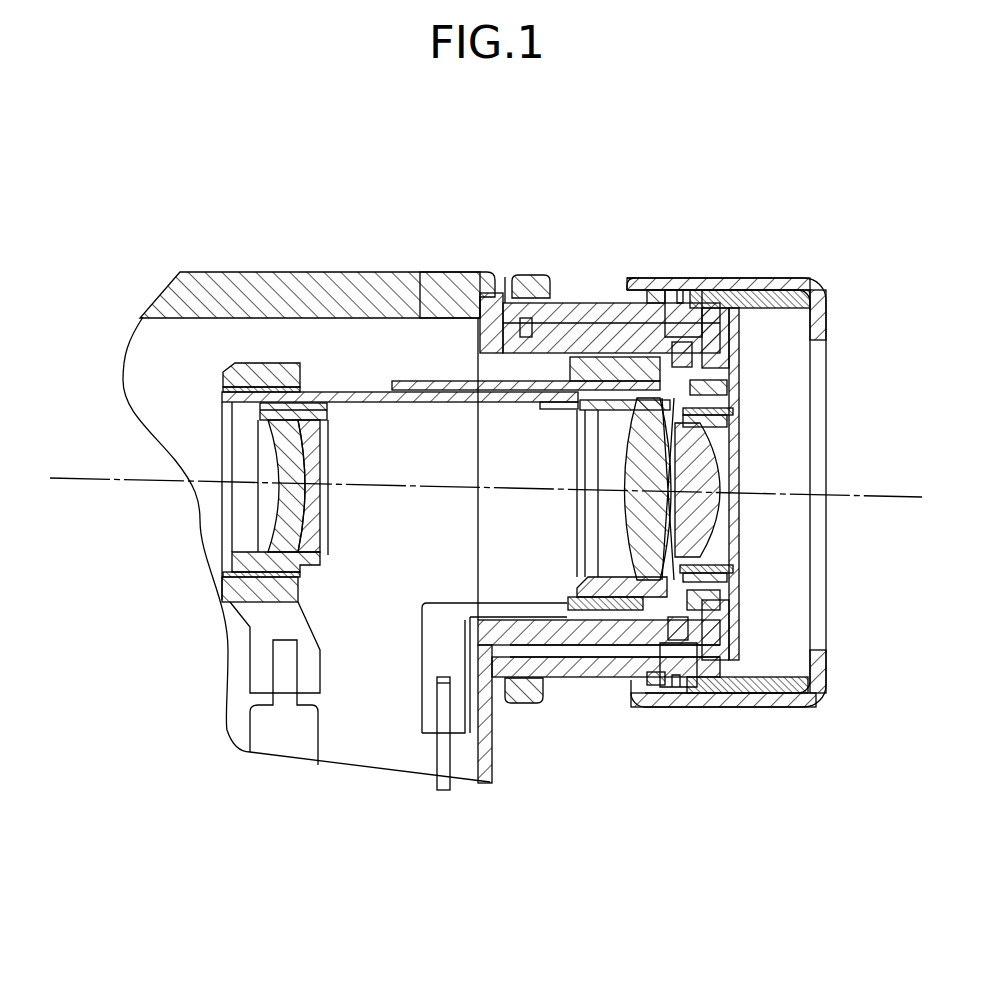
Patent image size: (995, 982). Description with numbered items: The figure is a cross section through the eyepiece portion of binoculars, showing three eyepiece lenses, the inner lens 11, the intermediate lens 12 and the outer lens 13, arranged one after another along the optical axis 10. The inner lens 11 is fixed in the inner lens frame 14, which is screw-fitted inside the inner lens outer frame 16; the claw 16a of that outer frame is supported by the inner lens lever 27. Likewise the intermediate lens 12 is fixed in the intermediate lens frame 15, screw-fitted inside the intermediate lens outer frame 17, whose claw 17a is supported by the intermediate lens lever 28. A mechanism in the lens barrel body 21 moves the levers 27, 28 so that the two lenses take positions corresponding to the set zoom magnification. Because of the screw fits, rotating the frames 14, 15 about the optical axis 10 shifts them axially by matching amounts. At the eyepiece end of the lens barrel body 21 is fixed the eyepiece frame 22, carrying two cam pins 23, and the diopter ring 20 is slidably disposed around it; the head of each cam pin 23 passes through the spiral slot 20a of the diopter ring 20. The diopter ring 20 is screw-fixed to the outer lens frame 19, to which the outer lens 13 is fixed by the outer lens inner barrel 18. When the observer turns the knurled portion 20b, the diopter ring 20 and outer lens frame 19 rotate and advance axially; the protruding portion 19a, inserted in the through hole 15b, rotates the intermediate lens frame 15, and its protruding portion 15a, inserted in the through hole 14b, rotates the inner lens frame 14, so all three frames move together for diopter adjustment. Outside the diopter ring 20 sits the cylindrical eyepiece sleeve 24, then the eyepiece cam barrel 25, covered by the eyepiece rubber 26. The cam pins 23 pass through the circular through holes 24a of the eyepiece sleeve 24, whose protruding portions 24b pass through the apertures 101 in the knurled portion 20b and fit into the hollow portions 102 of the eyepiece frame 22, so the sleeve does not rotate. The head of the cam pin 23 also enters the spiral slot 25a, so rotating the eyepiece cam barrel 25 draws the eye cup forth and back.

The optical axis 10 is at (135, 470).
The inner lens 11 is at (290, 505).
The intermediate lens 12 is at (645, 495).
The outer lens 13 is at (712, 513).
The inner lens frame 14 is at (300, 385).
The through hole 14b is at (330, 395).
The intermediate lens frame 15 is at (580, 580).
The protruding portion 15a is at (348, 392).
The through hole 15b is at (555, 402).
The inner lens outer frame 16 is at (262, 598).
The claw 16a is at (255, 670).
The intermediate lens outer frame 17 is at (570, 680).
The claw 17a is at (405, 730).
The outer lens inner barrel 18 is at (718, 422).
The outer lens frame 19 is at (720, 405).
The protruding portion 19a is at (420, 380).
The diopter ring 20 is at (603, 278).
The spiral slot 20a is at (722, 280).
The knurled portion 20b is at (540, 280).
The lens barrel body 21 is at (232, 272).
The eyepiece frame 22 is at (423, 277).
The cam pin 23 is at (697, 280).
The eyepiece sleeve 24 is at (740, 315).
The through hole 24a is at (623, 282).
The protruding portion 24b is at (462, 277).
The eyepiece cam barrel 25 is at (768, 700).
The spiral slot 25a is at (685, 280).
The eyepiece rubber 26 is at (822, 668).
The inner lens lever 27 is at (290, 750).
The intermediate lens lever 28 is at (443, 763).
The aperture 101 is at (567, 278).
The hollow portion 102 is at (505, 277).